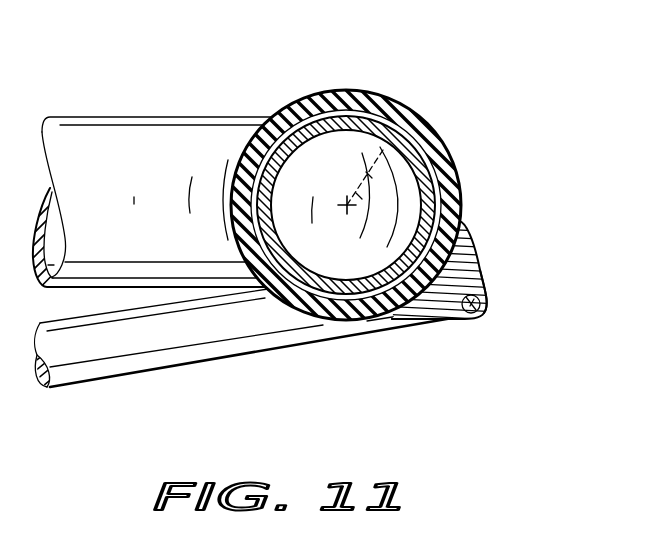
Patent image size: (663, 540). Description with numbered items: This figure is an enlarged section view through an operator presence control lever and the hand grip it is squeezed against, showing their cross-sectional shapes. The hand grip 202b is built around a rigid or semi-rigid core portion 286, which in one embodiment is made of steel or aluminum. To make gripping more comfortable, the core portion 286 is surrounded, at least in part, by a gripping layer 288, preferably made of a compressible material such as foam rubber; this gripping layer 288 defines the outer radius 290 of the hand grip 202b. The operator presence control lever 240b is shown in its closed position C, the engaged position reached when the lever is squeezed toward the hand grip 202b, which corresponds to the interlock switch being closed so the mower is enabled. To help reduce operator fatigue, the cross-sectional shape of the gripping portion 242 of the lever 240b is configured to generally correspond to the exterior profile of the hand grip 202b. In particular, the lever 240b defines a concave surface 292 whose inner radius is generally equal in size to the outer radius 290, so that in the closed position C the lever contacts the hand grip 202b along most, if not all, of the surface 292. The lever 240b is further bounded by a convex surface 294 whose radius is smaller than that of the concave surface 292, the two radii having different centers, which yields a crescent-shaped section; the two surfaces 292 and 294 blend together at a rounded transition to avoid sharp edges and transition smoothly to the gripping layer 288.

The hand grip 202b is at (332, 167).
The outer radius 290 is at (372, 172).
The gripping layer 288 is at (445, 143).
The core portion 286 is at (457, 169).
The convex surface 294 is at (468, 252).
The operator presence control lever 240b is at (496, 311).
The gripping portion 242 is at (476, 324).
The concave surface 292 is at (405, 292).
The closed position C is at (235, 358).